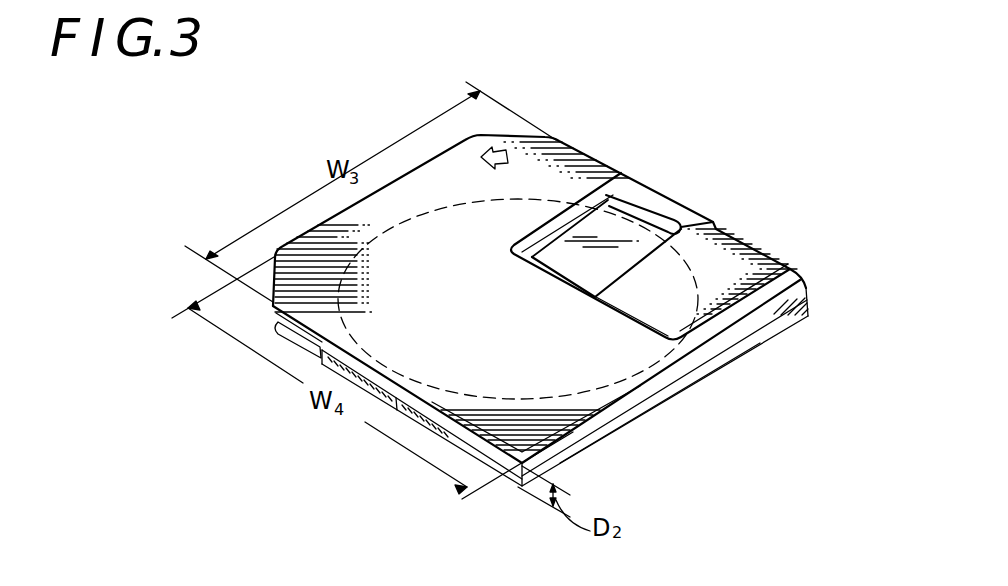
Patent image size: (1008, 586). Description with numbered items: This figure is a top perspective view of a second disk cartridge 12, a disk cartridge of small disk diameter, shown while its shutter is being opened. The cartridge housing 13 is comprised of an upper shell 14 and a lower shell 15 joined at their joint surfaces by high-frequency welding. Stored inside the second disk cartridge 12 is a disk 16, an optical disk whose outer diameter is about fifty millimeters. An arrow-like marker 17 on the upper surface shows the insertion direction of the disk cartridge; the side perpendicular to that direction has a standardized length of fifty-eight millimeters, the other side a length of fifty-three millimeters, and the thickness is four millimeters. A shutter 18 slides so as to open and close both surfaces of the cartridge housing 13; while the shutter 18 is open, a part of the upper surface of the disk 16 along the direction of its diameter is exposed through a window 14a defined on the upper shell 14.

The second disk cartridge 12 is at (688, 398).
The cartridge housing 13 is at (573, 310).
The upper shell 14 is at (765, 318).
The window 14a is at (655, 204).
The lower shell 15 is at (753, 342).
The disk 16 is at (673, 212).
The arrow-like marker 17 is at (510, 158).
The shutter 18 is at (745, 258).